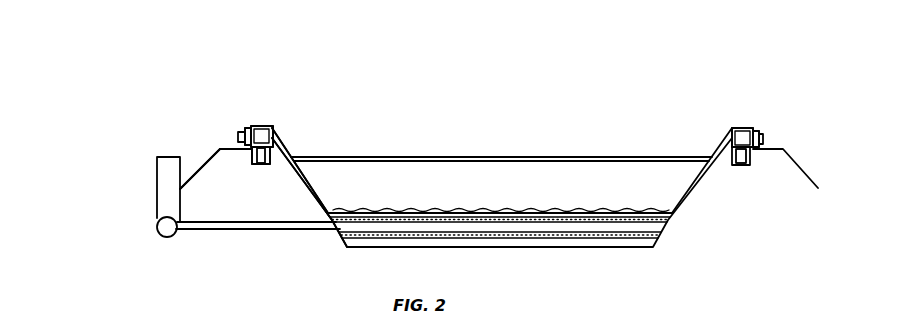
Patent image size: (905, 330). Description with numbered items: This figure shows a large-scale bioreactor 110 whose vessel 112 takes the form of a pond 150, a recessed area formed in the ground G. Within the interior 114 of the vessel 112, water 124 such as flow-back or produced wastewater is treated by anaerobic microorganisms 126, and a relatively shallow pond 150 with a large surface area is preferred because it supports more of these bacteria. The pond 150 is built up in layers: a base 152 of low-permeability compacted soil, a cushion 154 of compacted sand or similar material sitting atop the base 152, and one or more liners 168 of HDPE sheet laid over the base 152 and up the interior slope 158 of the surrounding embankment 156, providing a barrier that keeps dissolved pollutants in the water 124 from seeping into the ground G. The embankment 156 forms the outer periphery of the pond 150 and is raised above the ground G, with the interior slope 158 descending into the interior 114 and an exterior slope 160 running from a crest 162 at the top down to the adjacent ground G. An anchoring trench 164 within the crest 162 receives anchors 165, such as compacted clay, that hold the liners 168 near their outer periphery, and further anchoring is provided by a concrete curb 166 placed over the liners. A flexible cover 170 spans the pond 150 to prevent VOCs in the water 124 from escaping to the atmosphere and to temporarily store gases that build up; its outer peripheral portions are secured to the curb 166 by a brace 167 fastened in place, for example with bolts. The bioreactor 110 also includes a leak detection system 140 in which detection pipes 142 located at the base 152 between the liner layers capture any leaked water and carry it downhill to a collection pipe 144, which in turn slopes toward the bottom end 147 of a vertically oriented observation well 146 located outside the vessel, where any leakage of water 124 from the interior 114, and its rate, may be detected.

The bioreactor 110 is at (127, 137).
The vessel 112 is at (692, 190).
The interior 114 is at (500, 193).
The water 124 is at (518, 172).
The anaerobic microorganisms 126 is at (674, 213).
The leak detection system 140 is at (88, 152).
The detection pipe 142 is at (193, 229).
The collection pipe 144 is at (158, 220).
The observation well 146 is at (168, 182).
The bottom end 147 is at (160, 238).
The pond 150 is at (648, 135).
The base 152 is at (386, 210).
The cushion 154 is at (449, 234).
The embankment 156 is at (220, 118).
The interior slope 158 is at (300, 180).
The exterior slope 160 is at (197, 167).
The crest 162 is at (226, 148).
The anchoring trench 164 is at (252, 163).
The anchors 165 is at (261, 164).
The concrete curb 166 is at (265, 133).
The brace 167 is at (247, 130).
The liner 168 is at (328, 216).
The cover 170 is at (327, 156).
The ground G is at (705, 259).